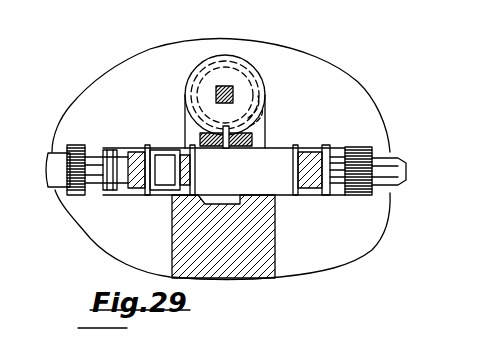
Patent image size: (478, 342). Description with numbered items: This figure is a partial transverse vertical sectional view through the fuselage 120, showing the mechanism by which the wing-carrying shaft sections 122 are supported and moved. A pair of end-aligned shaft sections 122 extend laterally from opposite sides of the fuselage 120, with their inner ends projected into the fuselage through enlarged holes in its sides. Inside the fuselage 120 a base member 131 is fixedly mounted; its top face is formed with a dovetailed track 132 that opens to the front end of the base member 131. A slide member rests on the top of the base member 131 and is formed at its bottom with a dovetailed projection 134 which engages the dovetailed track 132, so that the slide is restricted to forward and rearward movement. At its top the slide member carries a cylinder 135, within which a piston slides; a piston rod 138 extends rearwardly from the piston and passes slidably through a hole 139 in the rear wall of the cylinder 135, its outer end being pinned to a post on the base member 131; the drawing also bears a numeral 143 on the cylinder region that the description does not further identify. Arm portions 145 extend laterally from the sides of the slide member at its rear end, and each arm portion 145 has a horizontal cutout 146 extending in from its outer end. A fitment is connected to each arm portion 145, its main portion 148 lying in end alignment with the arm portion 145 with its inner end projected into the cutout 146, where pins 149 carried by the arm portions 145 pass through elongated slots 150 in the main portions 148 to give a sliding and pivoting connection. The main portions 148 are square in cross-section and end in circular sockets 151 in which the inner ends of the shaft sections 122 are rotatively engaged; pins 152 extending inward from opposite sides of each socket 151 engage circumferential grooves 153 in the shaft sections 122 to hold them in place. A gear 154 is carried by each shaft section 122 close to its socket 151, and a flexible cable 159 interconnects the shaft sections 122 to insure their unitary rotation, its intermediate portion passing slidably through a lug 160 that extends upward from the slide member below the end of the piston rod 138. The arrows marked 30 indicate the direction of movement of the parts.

The direction of movement arrow 30 is at (352, 125).
The fuselage 120 is at (322, 258).
The shaft sections 122 is at (46, 168).
The base member 131 is at (230, 278).
The dovetailed track 132 is at (200, 207).
The dovetailed projection 134 is at (235, 200).
The cylinder 135 is at (201, 62).
The piston rod 138 is at (247, 80).
The hole 139 is at (227, 85).
The bearing ring 143 is at (189, 76).
The arm portions 145 is at (147, 147).
The horizontal cutout 146 is at (175, 147).
The main portion 148 is at (146, 196).
The pins 149 is at (123, 147).
The elongated slots 150 is at (230, 178).
The circular sockets 151 is at (125, 147).
The pins 152 is at (110, 148).
The circumferential grooves 153 is at (258, 117).
The gear 154 is at (365, 196).
The flexible cable 159 is at (243, 136).
The lug 160 is at (257, 97).